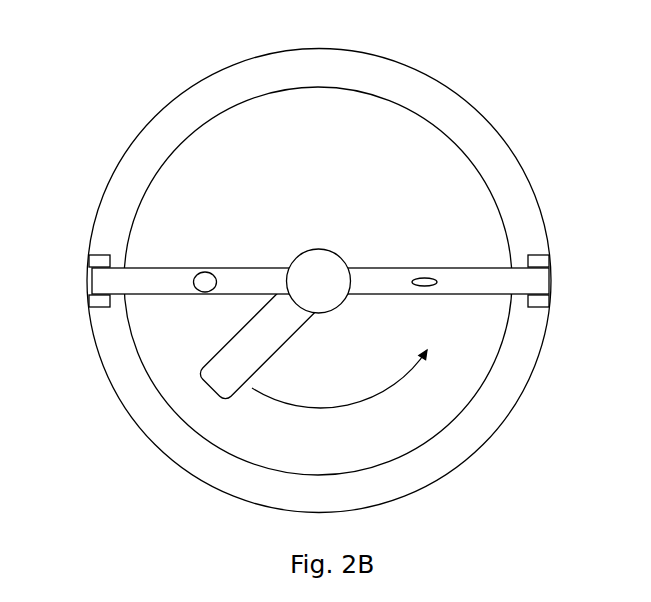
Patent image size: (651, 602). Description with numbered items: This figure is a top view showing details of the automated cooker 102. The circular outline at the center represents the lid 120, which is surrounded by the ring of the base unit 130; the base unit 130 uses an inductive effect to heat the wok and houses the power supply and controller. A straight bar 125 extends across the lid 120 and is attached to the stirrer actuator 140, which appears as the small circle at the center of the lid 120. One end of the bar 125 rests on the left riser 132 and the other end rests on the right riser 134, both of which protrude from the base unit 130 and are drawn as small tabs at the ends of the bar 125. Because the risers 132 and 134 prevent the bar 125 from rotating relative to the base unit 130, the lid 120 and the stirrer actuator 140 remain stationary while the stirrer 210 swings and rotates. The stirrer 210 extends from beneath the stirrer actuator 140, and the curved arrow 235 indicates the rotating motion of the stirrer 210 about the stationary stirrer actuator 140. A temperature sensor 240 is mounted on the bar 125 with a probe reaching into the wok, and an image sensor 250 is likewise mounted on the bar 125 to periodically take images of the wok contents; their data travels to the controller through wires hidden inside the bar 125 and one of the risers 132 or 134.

The automated cooker 102 is at (320, 264).
The lid 120 is at (321, 175).
The bar 125 is at (255, 277).
The base unit 130 is at (198, 100).
The left riser 132 is at (96, 262).
The right riser 134 is at (542, 263).
The stirrer actuator 140 is at (319, 281).
The stirrer 210 is at (282, 330).
The rotation direction arrow 235 is at (351, 367).
The temperature sensor 240 is at (427, 278).
The image sensor 250 is at (205, 277).